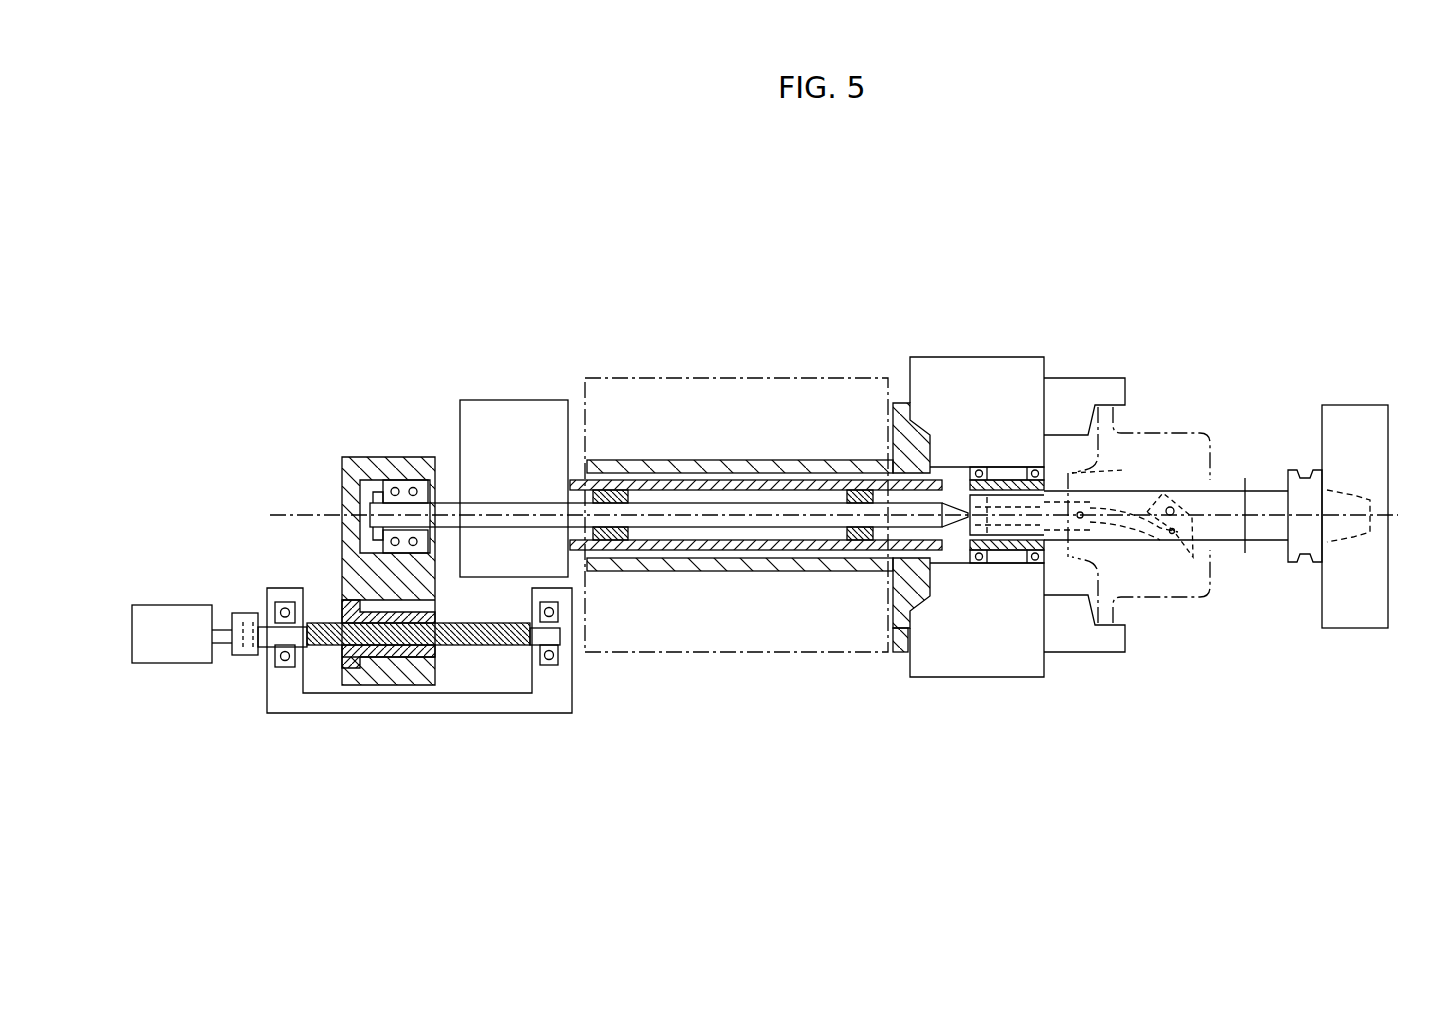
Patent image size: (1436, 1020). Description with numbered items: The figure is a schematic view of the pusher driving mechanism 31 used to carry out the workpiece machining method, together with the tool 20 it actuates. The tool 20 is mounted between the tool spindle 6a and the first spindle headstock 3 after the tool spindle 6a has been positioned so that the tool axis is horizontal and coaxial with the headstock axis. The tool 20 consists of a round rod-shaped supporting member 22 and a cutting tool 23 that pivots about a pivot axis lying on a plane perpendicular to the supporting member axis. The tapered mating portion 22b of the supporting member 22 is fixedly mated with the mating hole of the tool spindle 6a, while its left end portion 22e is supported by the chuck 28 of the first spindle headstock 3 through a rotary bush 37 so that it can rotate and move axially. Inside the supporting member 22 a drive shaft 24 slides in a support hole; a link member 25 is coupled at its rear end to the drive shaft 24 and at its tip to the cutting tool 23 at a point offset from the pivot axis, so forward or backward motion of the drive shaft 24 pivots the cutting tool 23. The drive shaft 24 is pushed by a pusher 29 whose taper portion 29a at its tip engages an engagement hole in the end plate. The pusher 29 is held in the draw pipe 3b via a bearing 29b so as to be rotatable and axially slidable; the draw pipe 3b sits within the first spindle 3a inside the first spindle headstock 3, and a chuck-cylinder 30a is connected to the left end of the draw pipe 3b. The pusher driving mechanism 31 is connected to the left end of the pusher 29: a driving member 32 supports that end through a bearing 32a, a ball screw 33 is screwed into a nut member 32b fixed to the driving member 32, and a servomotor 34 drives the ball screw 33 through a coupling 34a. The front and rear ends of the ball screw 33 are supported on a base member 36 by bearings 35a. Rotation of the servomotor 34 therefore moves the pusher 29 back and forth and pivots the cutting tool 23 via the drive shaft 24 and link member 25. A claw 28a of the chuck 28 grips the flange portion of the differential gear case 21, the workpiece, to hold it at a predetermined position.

The first spindle headstock 3 is at (690, 375).
The first spindle 3a is at (770, 460).
The draw pipe 3b is at (815, 470).
The tool spindle 6a is at (1340, 405).
The tool 20 is at (1167, 542).
The differential gear case 21 is at (1168, 430).
The supporting member 22 is at (1183, 490).
The tapered mating portion 22b is at (1372, 487).
The left end portion 22e is at (1010, 555).
The cutting tool 23 is at (1240, 480).
The drive shaft 24 is at (1115, 495).
The link member 25 is at (1125, 548).
The chuck 28 is at (1005, 677).
The claw 28a is at (1088, 378).
The pusher 29 is at (718, 480).
The taper portion 29a is at (947, 510).
The bearing 29b is at (615, 490).
The chuck-cylinder 30a is at (512, 400).
The pusher driving mechanism 31 is at (290, 478).
The driving member 32 is at (372, 457).
The bearing 32a is at (398, 480).
The nut member 32b is at (400, 668).
The ball screw 33 is at (490, 645).
The servomotor 34 is at (170, 663).
The coupling 34a is at (245, 613).
The bearing 35a is at (285, 667).
The base member 36 is at (340, 713).
The rotary bush 37 is at (992, 467).